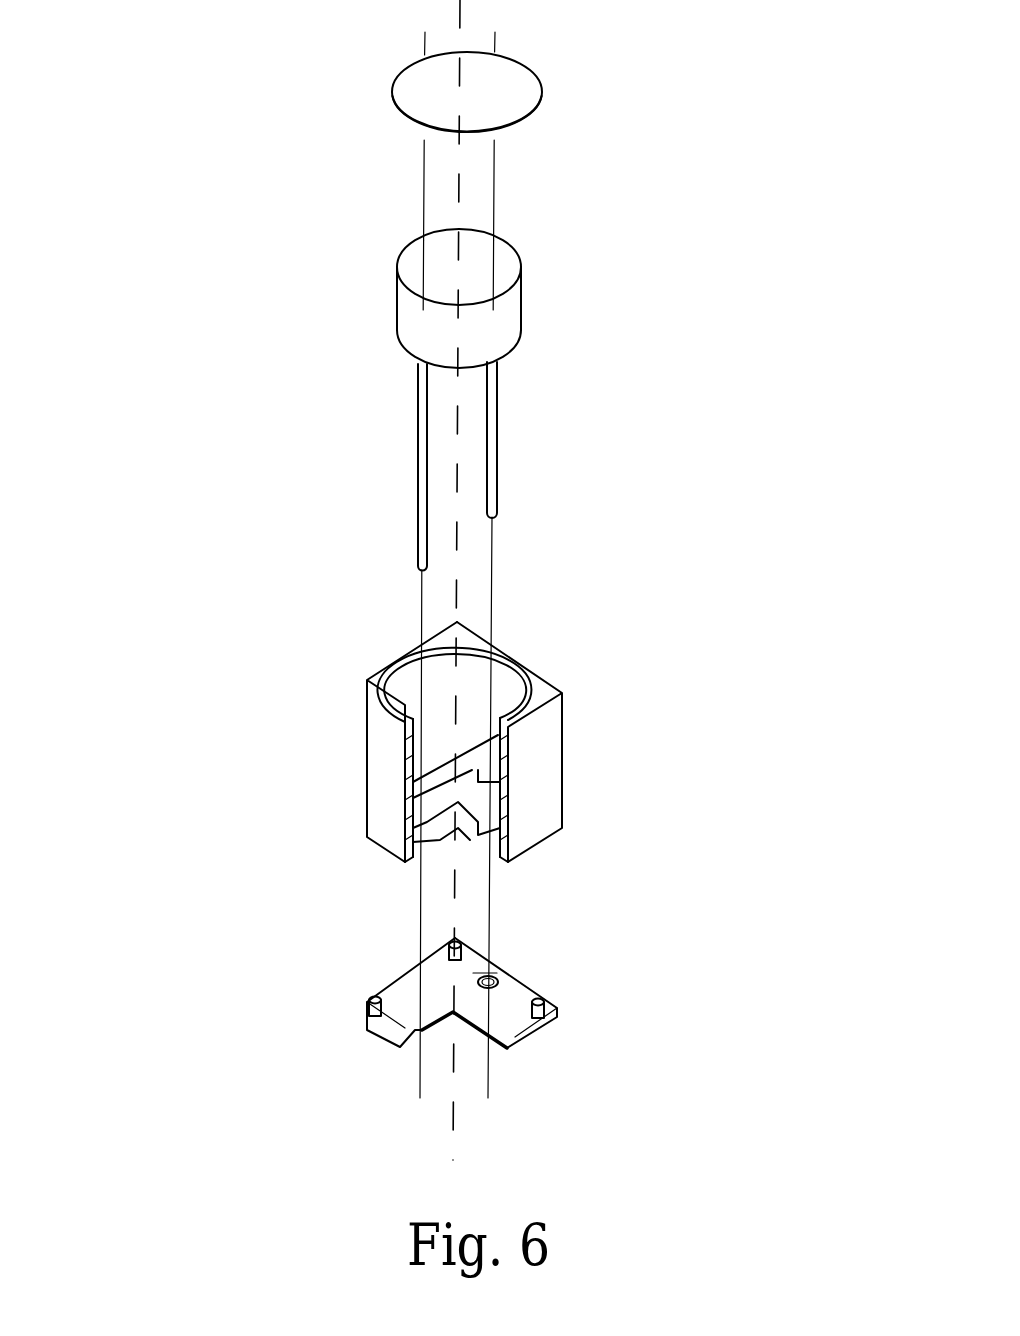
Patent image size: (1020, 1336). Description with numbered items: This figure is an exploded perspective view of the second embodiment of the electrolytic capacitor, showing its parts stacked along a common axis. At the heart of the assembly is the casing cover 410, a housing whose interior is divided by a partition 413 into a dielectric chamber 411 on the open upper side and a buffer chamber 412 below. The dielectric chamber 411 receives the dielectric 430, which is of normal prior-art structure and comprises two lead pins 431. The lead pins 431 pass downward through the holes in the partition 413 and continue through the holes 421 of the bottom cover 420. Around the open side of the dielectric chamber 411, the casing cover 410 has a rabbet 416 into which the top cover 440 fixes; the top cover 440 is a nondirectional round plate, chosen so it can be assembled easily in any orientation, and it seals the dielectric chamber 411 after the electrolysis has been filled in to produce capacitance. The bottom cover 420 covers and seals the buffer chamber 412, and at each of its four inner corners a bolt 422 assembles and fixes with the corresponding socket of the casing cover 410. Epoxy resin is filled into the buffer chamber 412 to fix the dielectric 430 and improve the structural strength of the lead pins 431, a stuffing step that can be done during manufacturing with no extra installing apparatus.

The top cover 440 is at (537, 88).
The dielectric 430 is at (517, 308).
The lead pins 431 is at (495, 432).
The casing cover 410 is at (543, 800).
The rabbet 416 is at (523, 700).
The dielectric chamber 411 is at (493, 693).
The partition 413 is at (487, 778).
The buffer chamber 412 is at (470, 832).
The bottom cover 420 is at (513, 1027).
The holes 421 is at (473, 973).
The bolt 422 is at (545, 998).